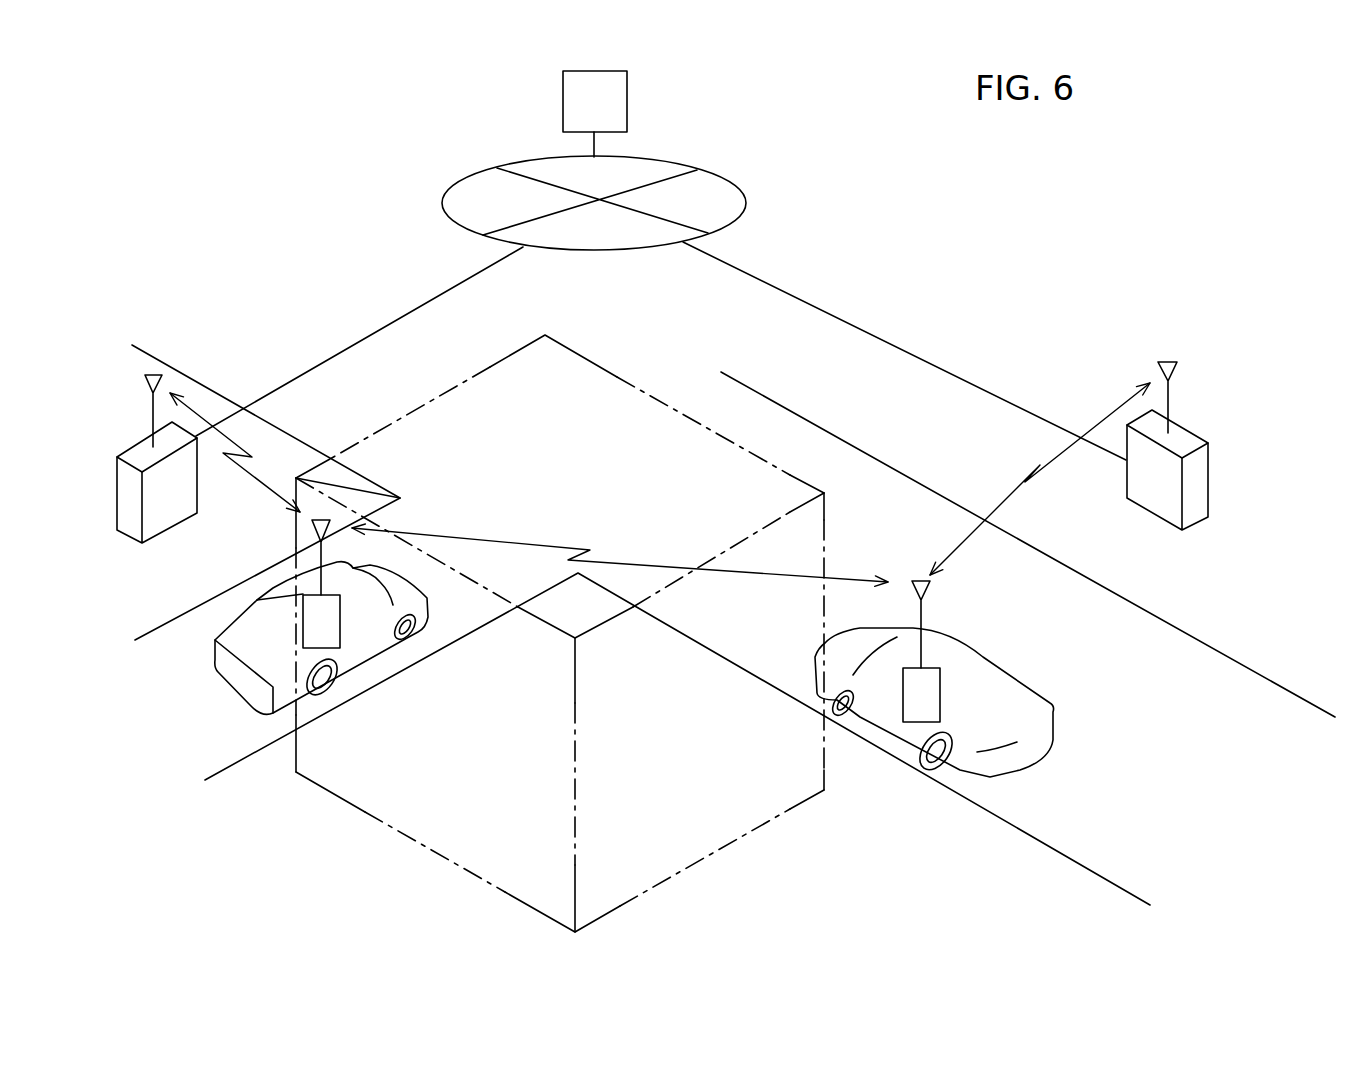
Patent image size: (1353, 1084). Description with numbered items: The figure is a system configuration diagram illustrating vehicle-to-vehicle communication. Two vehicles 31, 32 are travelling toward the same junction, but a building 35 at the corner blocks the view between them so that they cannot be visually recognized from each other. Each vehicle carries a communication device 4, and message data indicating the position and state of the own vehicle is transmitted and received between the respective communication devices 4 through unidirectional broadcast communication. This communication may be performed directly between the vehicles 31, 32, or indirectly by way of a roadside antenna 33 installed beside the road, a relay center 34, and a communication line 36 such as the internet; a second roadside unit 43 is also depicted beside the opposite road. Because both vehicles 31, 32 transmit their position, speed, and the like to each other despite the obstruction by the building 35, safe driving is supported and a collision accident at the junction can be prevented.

The communication device 4 is at (340, 642).
The vehicle 31 is at (982, 657).
The vehicle 32 is at (215, 653).
The antenna 33 is at (1171, 360).
The relay center 34 is at (627, 94).
The building 35 is at (598, 359).
The communication line 36 is at (470, 176).
The roadside unit 43 is at (145, 381).